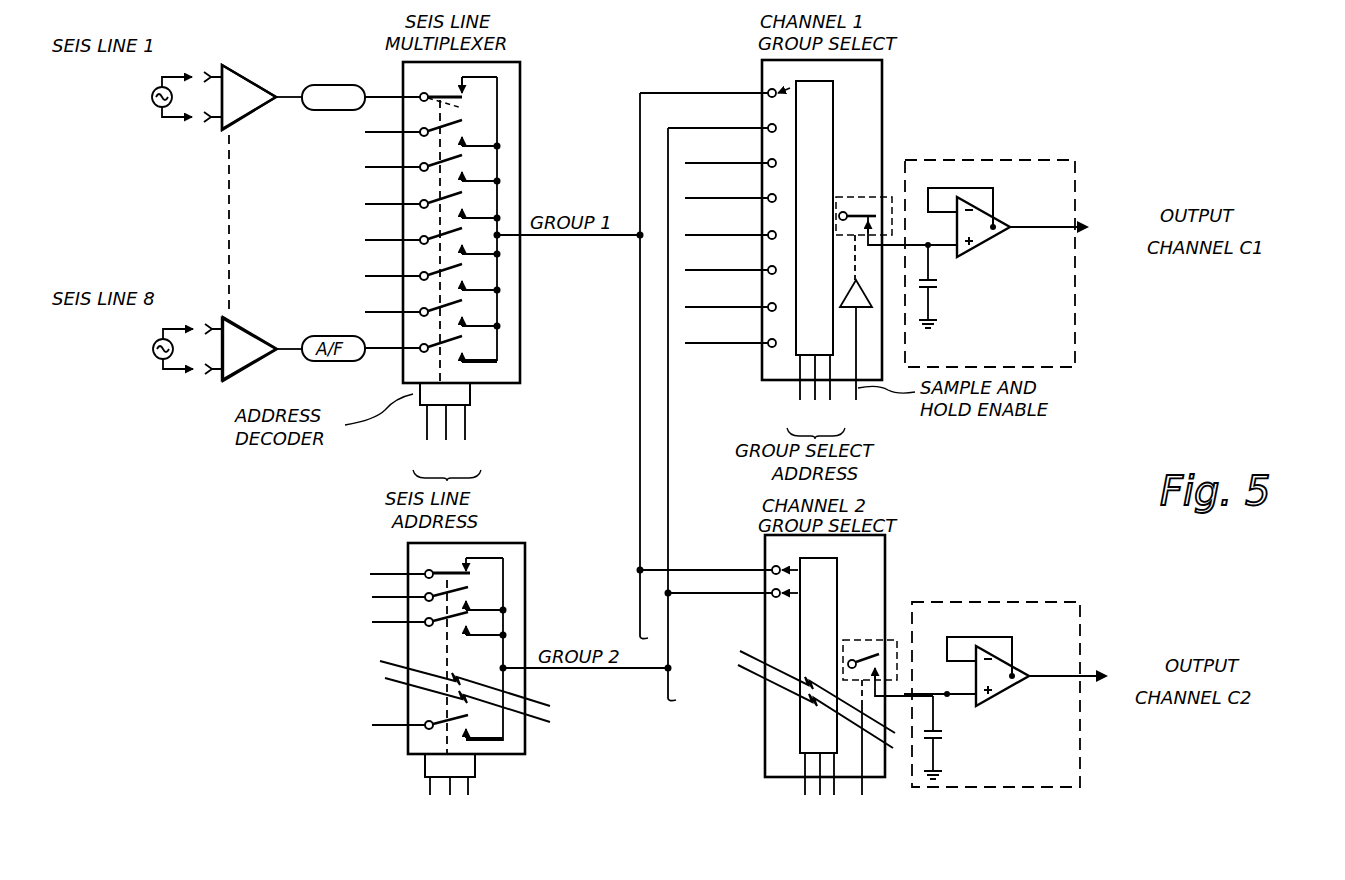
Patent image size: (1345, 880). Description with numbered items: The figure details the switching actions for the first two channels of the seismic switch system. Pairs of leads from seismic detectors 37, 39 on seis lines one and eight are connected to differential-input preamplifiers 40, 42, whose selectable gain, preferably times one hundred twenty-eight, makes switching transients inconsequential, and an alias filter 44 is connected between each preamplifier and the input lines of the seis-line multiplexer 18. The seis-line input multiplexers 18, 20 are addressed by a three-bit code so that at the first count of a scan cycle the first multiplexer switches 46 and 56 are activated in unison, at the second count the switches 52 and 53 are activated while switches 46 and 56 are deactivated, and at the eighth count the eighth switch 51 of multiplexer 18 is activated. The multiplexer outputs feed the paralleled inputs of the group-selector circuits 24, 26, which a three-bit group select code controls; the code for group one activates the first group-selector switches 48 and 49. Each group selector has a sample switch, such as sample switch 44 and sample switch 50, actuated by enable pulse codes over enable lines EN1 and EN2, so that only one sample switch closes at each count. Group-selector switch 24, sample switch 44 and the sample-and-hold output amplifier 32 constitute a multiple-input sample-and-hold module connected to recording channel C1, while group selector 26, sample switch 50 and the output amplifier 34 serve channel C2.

The seis-line input multiplexer 18 is at (450, 271).
The seis-line input multiplexer 20 is at (451, 679).
The group-selector circuit 24 is at (787, 244).
The group-selector circuit 26 is at (798, 677).
The sample-and-hold output amplifier channel 32 is at (1043, 160).
The sample-and-hold output amplifier channel 34 is at (1054, 602).
The detector 37 is at (150, 97).
The detector 39 is at (150, 350).
The differential-input preamplifier 40 is at (252, 84).
The differential-input preamplifier 42 is at (252, 332).
The alias filter / sample switch 44 is at (326, 85).
The first multiplexer switch 46 is at (464, 102).
The first group-selector switch 48 is at (790, 88).
The first group-selector switch 49 is at (792, 576).
The sample switch 50 is at (855, 640).
The eighth multiplexer switch 51 is at (797, 598).
The multiplexer switch 52 is at (460, 119).
The multiplexer switch 53 is at (470, 594).
The first multiplexer switch 56 is at (450, 569).